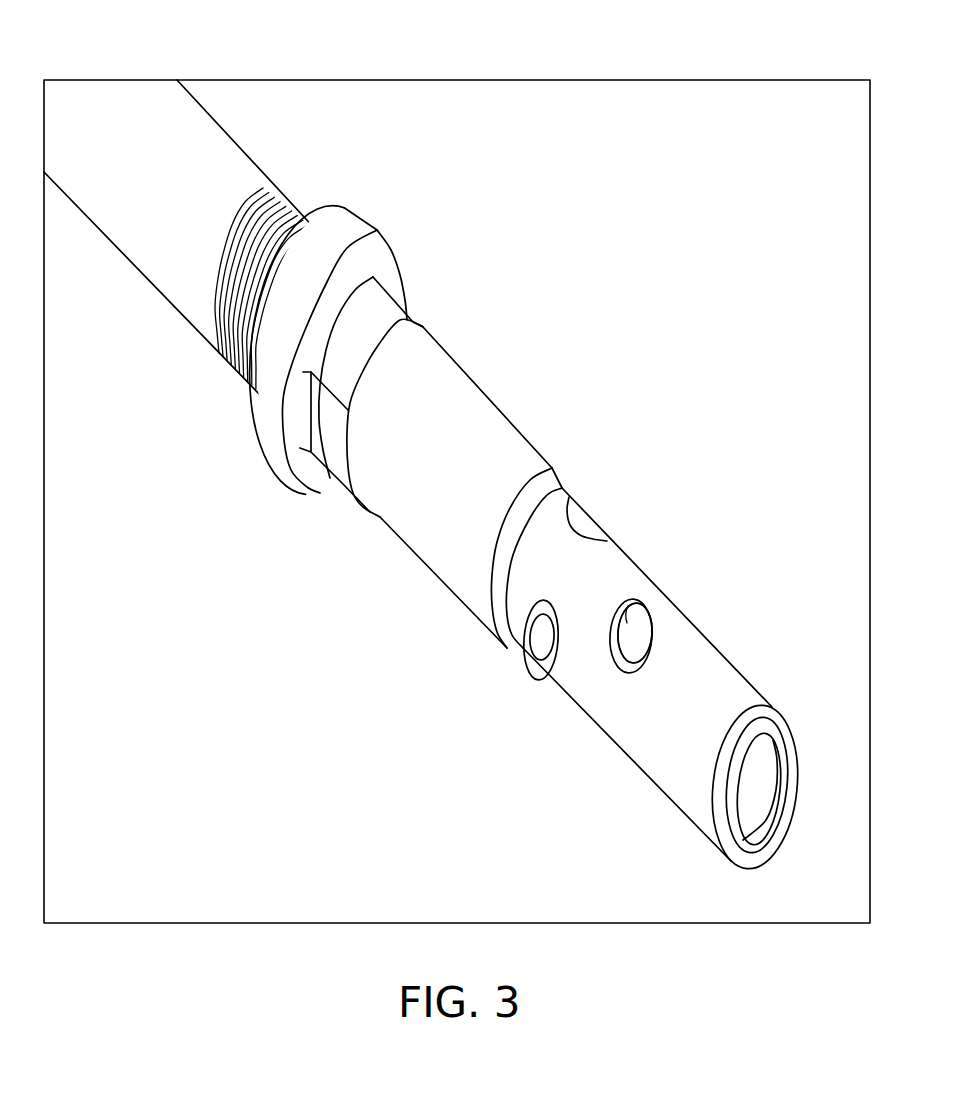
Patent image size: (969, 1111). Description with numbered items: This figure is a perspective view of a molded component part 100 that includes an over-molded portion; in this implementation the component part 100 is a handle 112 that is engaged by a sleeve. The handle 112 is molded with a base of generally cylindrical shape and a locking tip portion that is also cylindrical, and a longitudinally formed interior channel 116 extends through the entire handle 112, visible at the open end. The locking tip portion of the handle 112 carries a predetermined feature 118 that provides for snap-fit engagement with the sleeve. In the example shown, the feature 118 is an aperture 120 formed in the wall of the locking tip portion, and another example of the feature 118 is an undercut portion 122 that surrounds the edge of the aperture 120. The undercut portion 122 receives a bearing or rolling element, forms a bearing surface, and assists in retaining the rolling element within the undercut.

The molded component part 100 is at (627, 53).
The handle 112 is at (522, 268).
The interior channel 116 is at (762, 788).
The feature 118 is at (630, 610).
The aperture 120 is at (653, 635).
The undercut portion 122 is at (642, 614).